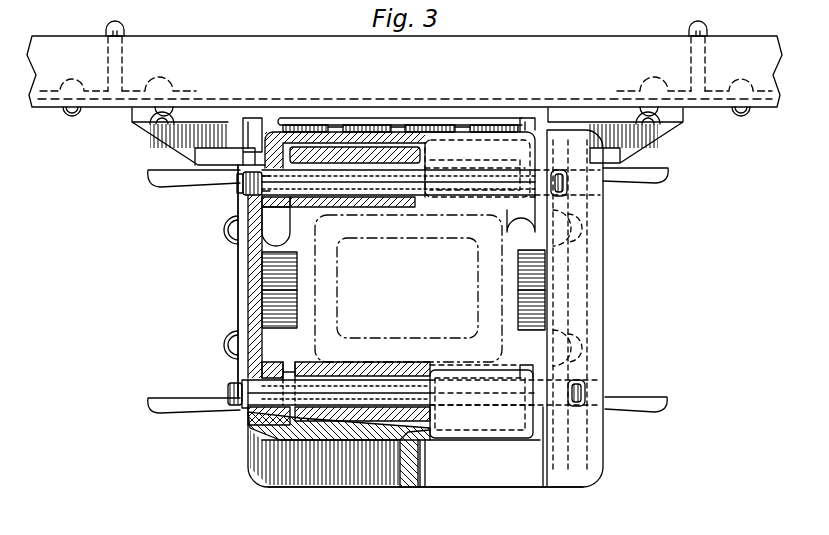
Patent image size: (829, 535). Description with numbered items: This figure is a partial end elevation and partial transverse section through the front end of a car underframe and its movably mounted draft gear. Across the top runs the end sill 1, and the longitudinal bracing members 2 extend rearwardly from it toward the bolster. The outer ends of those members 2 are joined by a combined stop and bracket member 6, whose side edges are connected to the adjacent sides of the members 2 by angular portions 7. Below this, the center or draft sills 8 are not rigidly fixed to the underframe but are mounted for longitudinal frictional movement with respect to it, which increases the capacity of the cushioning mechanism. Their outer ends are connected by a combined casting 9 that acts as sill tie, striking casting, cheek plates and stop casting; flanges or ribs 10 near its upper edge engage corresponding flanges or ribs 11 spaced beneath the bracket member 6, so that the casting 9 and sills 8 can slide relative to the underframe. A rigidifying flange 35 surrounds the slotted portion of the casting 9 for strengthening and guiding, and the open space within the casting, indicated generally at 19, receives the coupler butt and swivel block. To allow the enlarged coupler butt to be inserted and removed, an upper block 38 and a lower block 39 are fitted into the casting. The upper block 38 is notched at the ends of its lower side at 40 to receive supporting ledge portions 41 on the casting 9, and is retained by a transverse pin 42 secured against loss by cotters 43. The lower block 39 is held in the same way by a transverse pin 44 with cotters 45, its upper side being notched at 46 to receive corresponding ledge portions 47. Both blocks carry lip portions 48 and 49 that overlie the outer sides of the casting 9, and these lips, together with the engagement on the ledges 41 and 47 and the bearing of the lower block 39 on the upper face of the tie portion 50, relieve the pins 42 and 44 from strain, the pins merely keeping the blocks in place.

The end sill 1 is at (524, 40).
The longitudinal bracing members 2 is at (106, 32).
The combined stop and bracket member 6 is at (465, 118).
The angular portions 7 is at (124, 32).
The center or draft sills 8 is at (238, 258).
The combined casting 9 is at (250, 296).
The flanges or ribs 10 is at (256, 135).
The flanges or ribs 11 is at (248, 156).
The cavity 19 is at (372, 345).
The rigidifying flange 35 is at (282, 290).
The upper block 38 is at (400, 196).
The lower block 39 is at (455, 372).
The notches 40 is at (318, 200).
The supporting ledge portions 41 is at (285, 206).
The transverse pin 42 is at (245, 182).
The cotters 43 is at (240, 190).
The transverse pin 44 is at (397, 380).
The cotters 45 is at (230, 392).
The notches 46 is at (330, 366).
The ledge portions 47 is at (288, 365).
The lip portion 48 is at (432, 130).
The lip portion 49 is at (475, 441).
The tie portion 50 is at (467, 482).